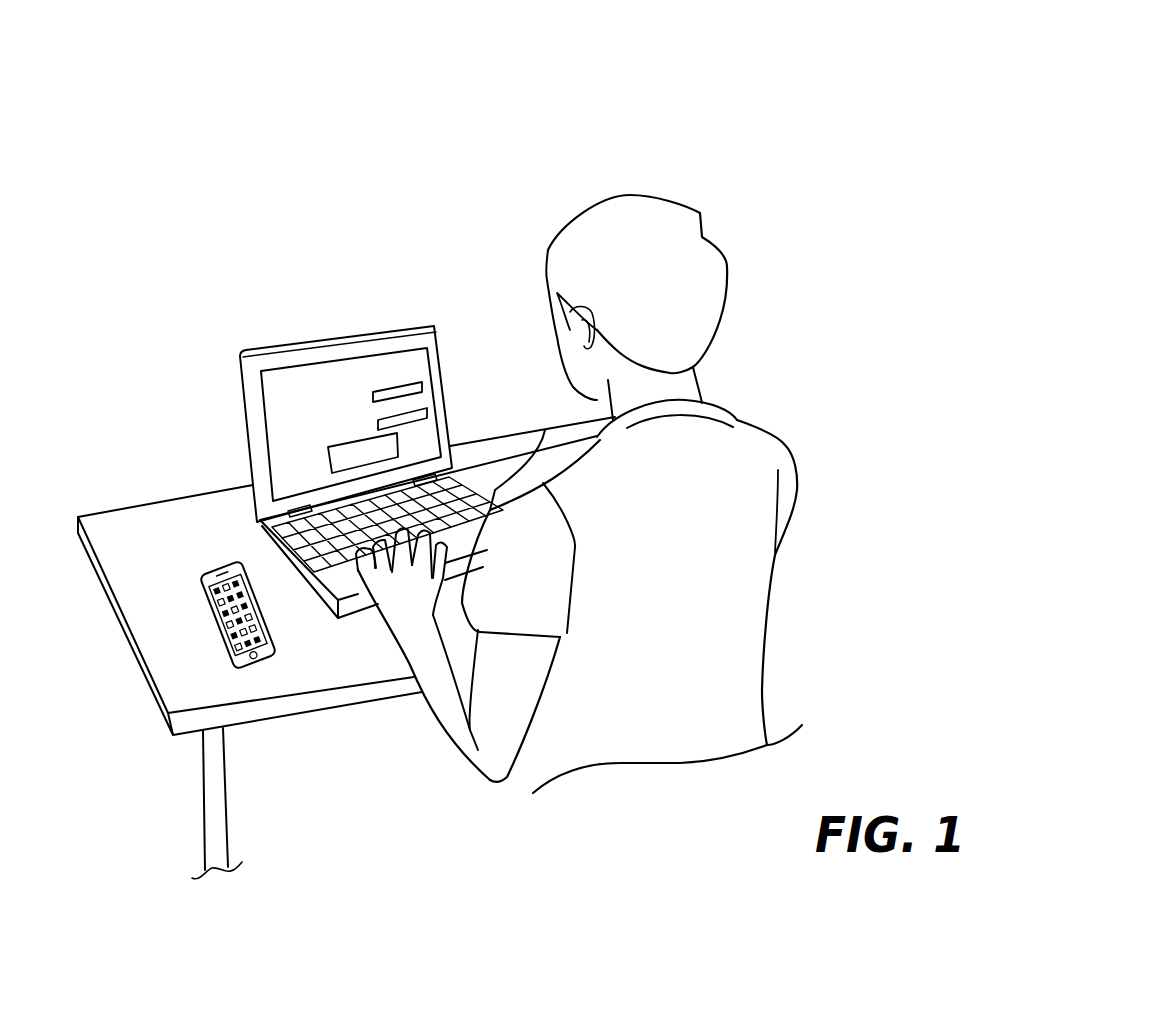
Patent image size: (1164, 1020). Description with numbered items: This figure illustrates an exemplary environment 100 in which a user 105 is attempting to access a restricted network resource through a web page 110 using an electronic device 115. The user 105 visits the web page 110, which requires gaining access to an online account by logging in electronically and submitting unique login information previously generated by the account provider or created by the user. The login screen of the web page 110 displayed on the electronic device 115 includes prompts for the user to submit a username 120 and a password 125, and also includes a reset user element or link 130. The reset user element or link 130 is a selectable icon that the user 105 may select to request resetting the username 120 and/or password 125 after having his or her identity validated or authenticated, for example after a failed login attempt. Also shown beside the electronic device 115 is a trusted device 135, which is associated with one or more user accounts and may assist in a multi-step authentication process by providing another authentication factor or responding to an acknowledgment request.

The environment 100 is at (1076, 126).
The user 105 is at (700, 213).
The web page 110 is at (264, 384).
The electronic device 115 is at (545, 430).
The username 120 is at (420, 385).
The password 125 is at (428, 414).
The reset user element or link 130 is at (400, 445).
The trusted device 135 is at (200, 594).